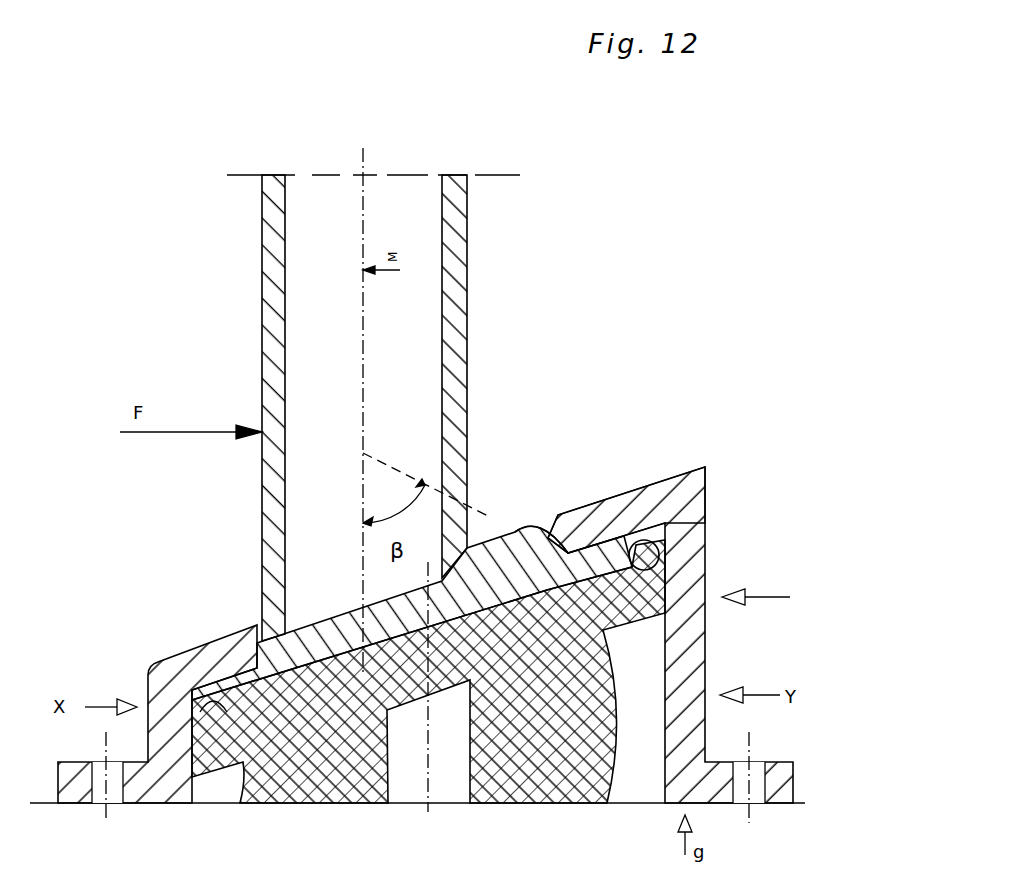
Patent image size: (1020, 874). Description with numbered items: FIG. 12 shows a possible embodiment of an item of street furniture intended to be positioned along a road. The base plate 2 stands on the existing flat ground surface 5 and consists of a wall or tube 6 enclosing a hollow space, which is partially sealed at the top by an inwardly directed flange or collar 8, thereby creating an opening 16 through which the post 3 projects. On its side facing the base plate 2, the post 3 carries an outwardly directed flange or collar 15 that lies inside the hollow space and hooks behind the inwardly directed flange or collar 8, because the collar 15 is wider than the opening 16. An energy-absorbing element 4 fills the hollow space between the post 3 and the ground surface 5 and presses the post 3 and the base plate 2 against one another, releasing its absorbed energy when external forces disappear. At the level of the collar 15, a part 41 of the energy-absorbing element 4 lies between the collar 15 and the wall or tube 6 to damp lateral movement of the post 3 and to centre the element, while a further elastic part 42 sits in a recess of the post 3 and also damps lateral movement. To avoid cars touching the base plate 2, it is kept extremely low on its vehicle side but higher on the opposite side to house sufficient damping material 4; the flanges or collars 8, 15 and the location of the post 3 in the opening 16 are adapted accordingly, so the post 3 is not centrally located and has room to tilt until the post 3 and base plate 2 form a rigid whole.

The base plate 2 is at (756, 589).
The post 3 is at (457, 247).
The energy-absorbing element 4 is at (550, 762).
The ground surface 5 is at (417, 826).
The wall or tube 6 is at (690, 657).
The inwardly directed flange or collar 8 is at (648, 503).
The outwardly directed flange or collar 15 is at (513, 555).
The opening 16 is at (539, 530).
The part of the energy-absorbing element 41 is at (660, 556).
The elastic part 42 is at (350, 668).